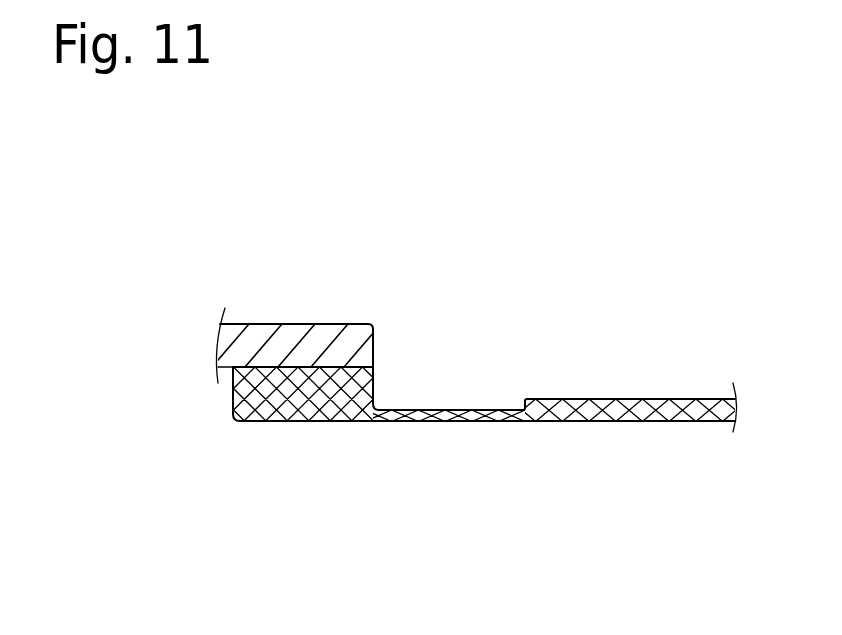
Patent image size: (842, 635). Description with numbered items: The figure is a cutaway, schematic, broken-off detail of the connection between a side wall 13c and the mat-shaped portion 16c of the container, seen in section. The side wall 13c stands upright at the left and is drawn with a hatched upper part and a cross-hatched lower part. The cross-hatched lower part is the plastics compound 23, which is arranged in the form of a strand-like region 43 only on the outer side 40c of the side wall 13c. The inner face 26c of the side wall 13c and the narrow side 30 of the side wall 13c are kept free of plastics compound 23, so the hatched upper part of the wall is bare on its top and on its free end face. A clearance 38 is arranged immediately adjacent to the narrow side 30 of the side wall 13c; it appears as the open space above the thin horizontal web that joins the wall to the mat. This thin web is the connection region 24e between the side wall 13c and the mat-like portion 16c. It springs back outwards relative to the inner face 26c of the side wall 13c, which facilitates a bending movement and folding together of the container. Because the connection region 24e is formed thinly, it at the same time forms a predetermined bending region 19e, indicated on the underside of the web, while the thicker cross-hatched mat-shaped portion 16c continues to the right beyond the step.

The side wall 13c is at (308, 353).
The inner face 26c is at (337, 324).
The narrow side 30 is at (374, 352).
The clearance 38 is at (464, 408).
The plastics compound 23 is at (303, 404).
The outer side 40c is at (308, 368).
The strand-like region 43 is at (353, 404).
The predetermined bending region 19e is at (433, 428).
The connection region 24e is at (470, 422).
The mat-shaped portion 16c is at (625, 428).